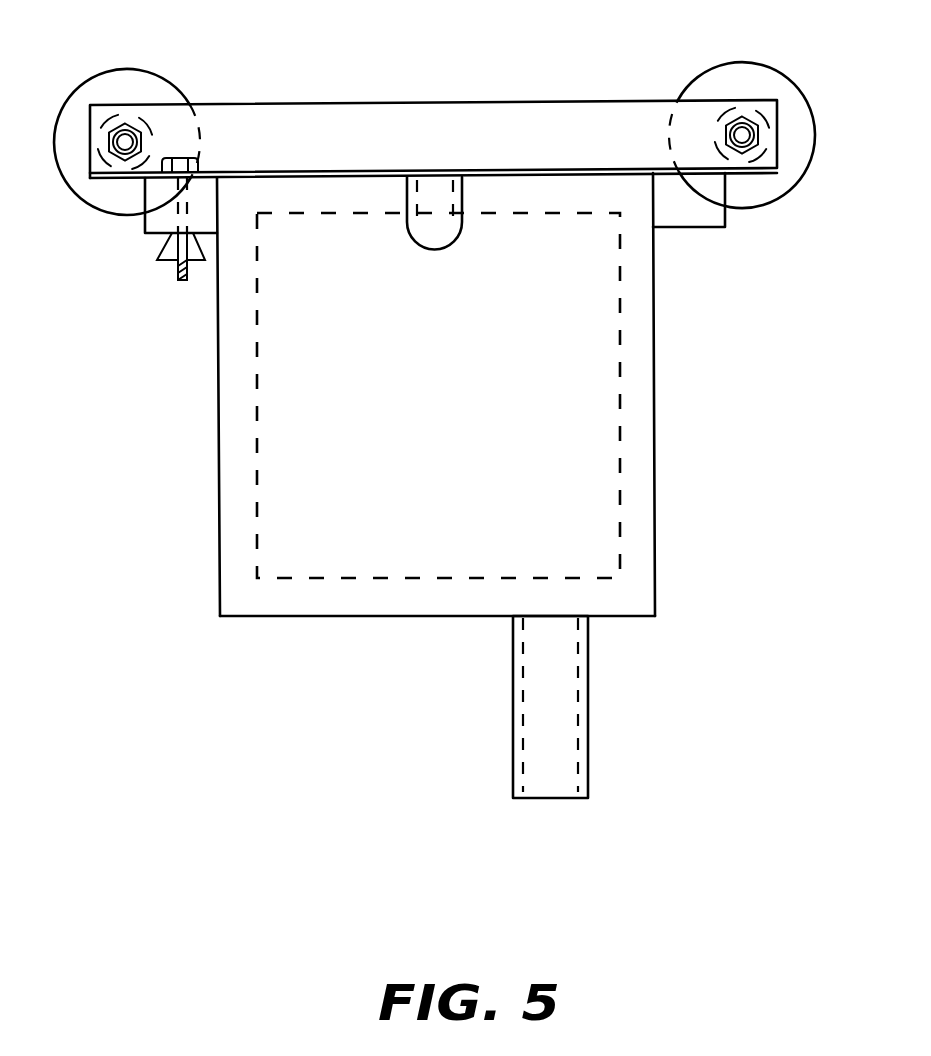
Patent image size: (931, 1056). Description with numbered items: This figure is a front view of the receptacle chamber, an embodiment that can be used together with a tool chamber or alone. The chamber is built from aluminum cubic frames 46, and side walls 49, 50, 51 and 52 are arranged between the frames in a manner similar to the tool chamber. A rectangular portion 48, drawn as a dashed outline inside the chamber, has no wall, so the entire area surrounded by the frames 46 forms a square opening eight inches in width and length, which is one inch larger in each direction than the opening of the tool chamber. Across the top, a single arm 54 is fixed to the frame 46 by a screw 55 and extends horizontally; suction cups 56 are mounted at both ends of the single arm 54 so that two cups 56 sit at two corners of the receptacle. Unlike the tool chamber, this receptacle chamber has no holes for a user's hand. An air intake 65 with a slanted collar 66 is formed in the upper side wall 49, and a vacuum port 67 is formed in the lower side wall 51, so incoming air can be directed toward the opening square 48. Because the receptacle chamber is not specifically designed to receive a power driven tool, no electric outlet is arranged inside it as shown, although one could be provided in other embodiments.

The cubic frame 46 is at (718, 217).
The rectangular portion 48 is at (620, 412).
The upper side wall 49 is at (298, 170).
The side wall 50 is at (657, 522).
The lower side wall 51 is at (403, 618).
The side wall 52 is at (218, 452).
The single arm 54 is at (270, 123).
The screw 55 is at (178, 280).
The suction cup 56 is at (100, 197).
The air intake 65 is at (433, 170).
The slanted collar 66 is at (443, 203).
The vacuum port 67 is at (513, 762).